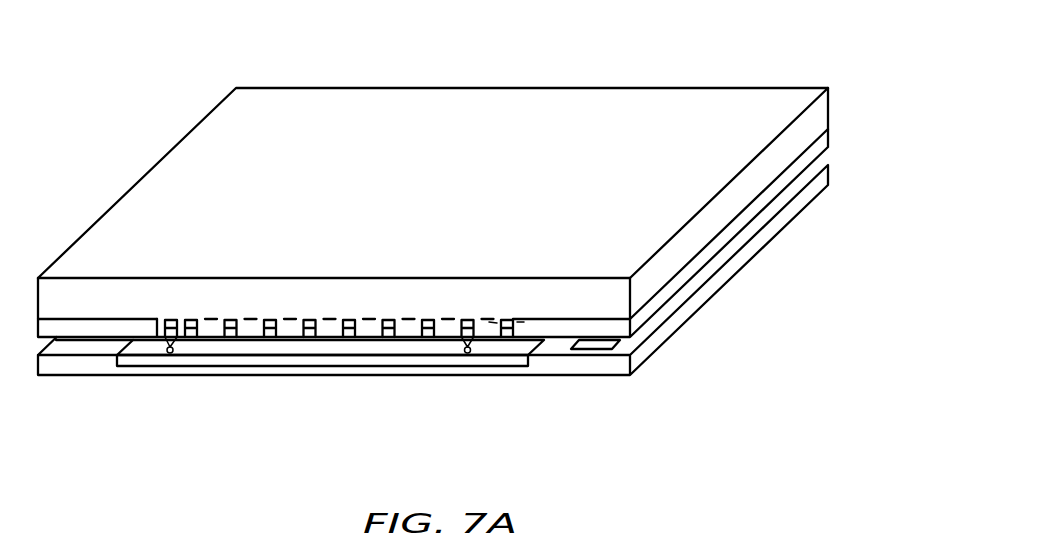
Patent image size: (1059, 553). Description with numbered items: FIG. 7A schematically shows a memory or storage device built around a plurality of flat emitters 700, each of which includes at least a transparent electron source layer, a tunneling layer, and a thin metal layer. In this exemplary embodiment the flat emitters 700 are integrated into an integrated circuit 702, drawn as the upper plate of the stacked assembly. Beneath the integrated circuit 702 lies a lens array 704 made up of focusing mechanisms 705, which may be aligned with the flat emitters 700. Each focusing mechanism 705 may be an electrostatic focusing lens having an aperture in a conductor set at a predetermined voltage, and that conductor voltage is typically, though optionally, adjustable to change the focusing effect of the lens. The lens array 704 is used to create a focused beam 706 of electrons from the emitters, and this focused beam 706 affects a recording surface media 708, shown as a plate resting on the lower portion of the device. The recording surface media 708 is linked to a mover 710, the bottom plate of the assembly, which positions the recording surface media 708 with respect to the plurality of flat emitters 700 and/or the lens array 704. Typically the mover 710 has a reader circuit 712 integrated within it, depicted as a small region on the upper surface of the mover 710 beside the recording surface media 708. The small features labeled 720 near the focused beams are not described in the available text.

The flat emitters 700 is at (212, 319).
The integrated circuit 702 is at (648, 108).
The lens array 704 is at (823, 140).
The focusing mechanisms 705 is at (489, 322).
The focused beam 706 is at (176, 348).
The recording surface media 708 is at (337, 352).
The mover 710 is at (822, 188).
The reader circuit 712 is at (618, 340).
The bumps 720 is at (167, 349).